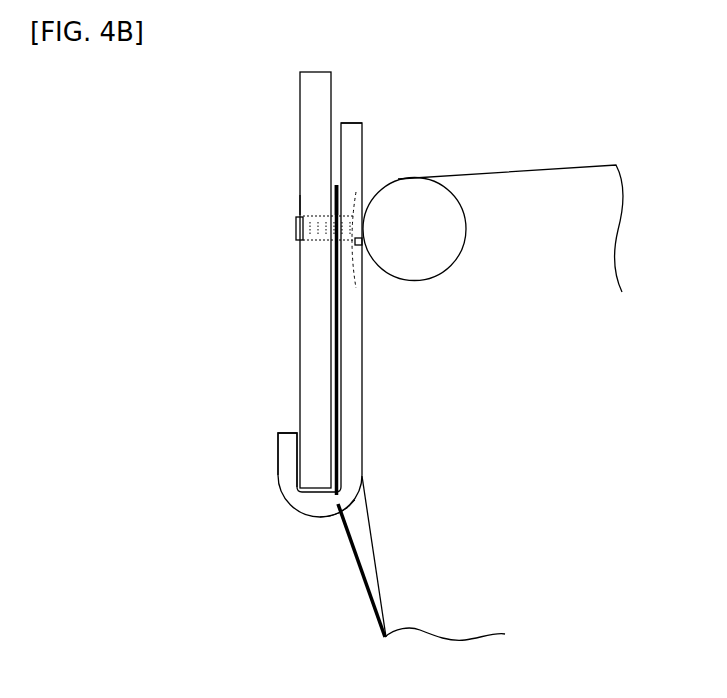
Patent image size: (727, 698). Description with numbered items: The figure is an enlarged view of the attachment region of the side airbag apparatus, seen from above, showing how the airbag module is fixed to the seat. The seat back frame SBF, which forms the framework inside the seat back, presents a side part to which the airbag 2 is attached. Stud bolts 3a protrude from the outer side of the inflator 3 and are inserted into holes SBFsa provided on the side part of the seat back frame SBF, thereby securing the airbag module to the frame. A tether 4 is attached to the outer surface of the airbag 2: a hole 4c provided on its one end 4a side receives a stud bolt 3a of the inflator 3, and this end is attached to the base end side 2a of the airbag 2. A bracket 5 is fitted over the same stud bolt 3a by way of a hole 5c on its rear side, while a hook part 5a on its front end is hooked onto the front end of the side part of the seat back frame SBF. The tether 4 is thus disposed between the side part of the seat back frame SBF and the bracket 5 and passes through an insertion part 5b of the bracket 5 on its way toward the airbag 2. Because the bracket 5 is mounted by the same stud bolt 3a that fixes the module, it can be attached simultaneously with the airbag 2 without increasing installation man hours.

The seat back frame SBF is at (318, 93).
The holes SBFsa is at (303, 213).
The airbag 2 is at (446, 615).
The base end side 2a is at (552, 178).
The inflator 3 is at (433, 262).
The stud bolt 3a is at (296, 228).
The tether 4 is at (337, 365).
The one end 4a is at (334, 190).
The hole 4c is at (360, 287).
The bracket 5 is at (350, 433).
The hook part 5a is at (291, 493).
The insertion part 5b is at (336, 514).
The hole 5c is at (356, 186).